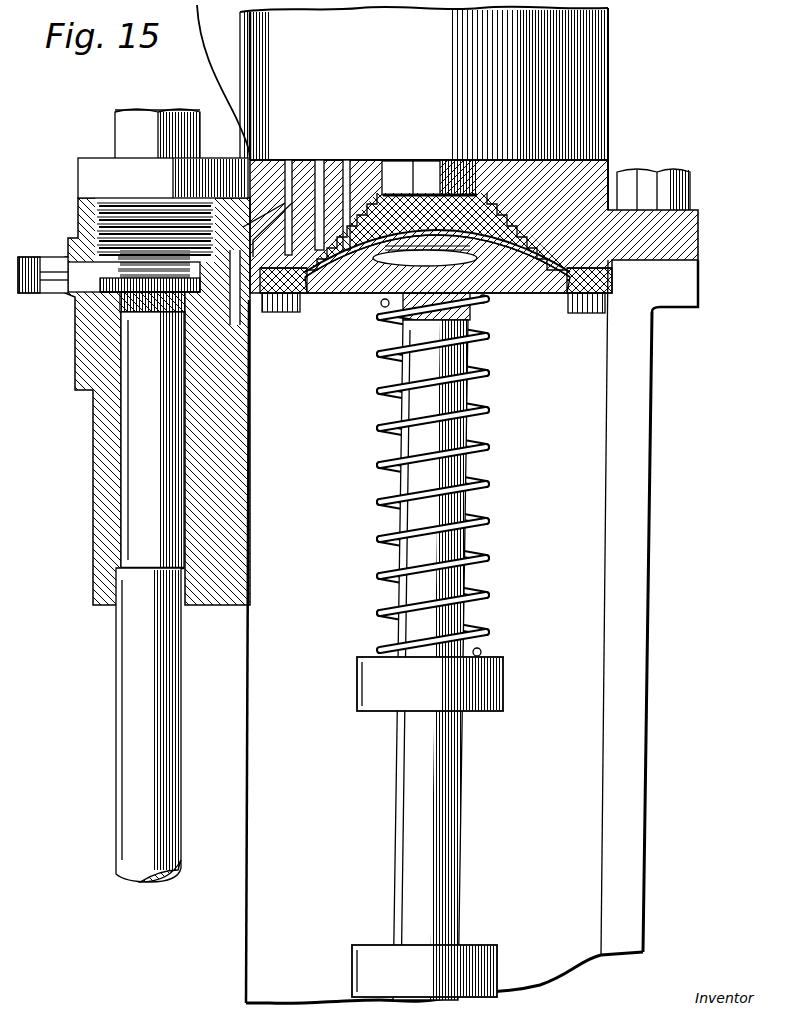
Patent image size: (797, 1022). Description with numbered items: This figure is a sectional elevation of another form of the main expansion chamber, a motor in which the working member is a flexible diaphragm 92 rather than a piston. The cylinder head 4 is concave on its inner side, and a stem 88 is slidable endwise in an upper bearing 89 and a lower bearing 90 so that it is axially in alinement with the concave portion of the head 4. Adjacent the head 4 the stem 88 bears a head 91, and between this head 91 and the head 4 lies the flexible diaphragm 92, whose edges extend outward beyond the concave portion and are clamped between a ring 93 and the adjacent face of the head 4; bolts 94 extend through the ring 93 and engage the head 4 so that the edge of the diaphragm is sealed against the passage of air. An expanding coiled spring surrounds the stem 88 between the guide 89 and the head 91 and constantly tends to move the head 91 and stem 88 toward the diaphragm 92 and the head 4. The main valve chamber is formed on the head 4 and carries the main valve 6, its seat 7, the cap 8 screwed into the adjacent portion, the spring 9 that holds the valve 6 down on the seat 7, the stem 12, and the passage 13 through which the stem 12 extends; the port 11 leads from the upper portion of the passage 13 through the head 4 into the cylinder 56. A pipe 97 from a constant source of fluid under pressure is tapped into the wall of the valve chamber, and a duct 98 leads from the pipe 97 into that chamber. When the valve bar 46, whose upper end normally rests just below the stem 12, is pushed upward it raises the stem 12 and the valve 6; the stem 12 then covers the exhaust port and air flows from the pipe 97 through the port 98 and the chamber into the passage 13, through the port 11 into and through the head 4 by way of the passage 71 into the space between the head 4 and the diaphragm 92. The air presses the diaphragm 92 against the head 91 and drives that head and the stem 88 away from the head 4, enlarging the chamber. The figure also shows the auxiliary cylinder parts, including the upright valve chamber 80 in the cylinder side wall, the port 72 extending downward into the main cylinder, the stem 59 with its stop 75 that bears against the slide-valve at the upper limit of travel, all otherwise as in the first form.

The head 4 is at (583, 173).
The main valve 6 is at (115, 302).
The seat 7 is at (95, 345).
The cap 8 is at (120, 170).
The expanding coiled spring 9 is at (135, 260).
The port 11 is at (288, 160).
The stem 12 is at (152, 505).
The passage 13 is at (118, 550).
The valve bar 46 is at (133, 700).
The cylinder 56 is at (424, 108).
The stem 59 is at (427, 173).
The passage 71 is at (345, 170).
The port 72 is at (320, 170).
The stop 75 is at (463, 197).
The upright valve chamber 80 is at (220, 60).
The stem 88 is at (430, 832).
The bearing 89 is at (487, 688).
The bearing 90 is at (483, 957).
The head 91 is at (470, 335).
The flexible diaphragm 92 is at (462, 237).
The ring 93 is at (295, 298).
The bolts 94 is at (283, 318).
The pipe 97 is at (35, 285).
The duct 98 is at (88, 277).